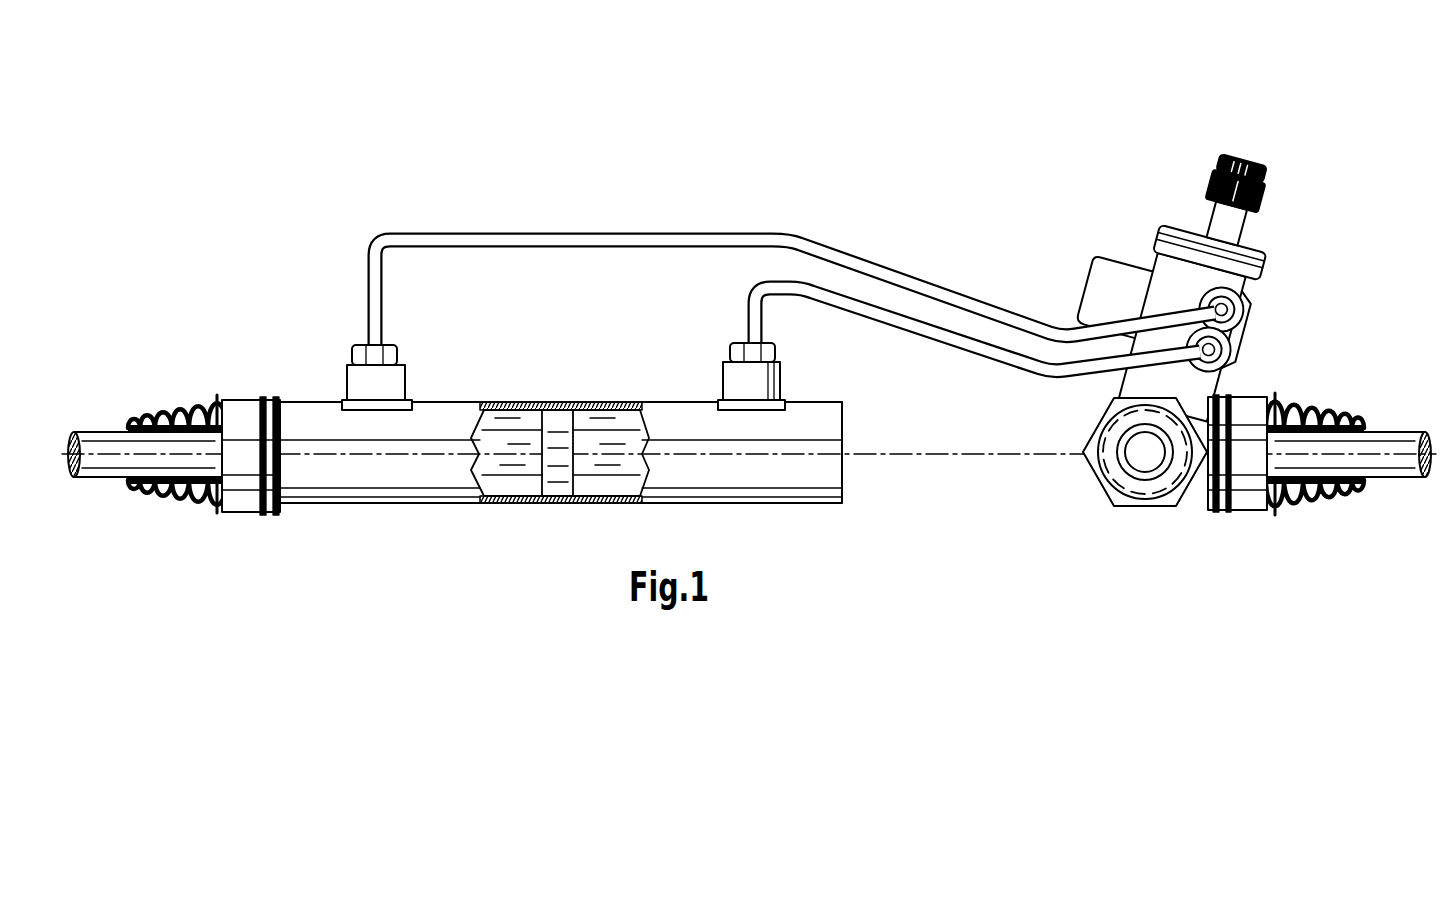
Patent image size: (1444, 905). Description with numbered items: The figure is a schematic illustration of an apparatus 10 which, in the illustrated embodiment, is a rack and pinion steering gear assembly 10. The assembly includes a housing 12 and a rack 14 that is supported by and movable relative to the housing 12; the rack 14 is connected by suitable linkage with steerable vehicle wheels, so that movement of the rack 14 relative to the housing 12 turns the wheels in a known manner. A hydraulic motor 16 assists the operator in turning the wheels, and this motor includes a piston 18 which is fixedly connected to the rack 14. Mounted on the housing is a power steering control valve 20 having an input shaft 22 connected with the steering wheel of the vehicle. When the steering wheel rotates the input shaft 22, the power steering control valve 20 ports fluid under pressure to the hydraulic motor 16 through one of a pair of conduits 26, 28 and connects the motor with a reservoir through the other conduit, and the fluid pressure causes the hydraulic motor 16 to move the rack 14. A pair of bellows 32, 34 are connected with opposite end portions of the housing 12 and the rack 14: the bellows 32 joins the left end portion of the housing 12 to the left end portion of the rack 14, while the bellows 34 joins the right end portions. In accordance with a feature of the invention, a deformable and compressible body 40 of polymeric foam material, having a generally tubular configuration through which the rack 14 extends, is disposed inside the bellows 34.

The rack and pinion steering gear assembly 10 is at (318, 117).
The housing 12 is at (390, 512).
The rack 14 is at (99, 440).
The hydraulic motor 16 is at (506, 388).
The piston 18 is at (559, 425).
The power steering control valve 20 is at (1188, 295).
The input shaft 22 is at (1232, 230).
The conduit 26 is at (858, 262).
The conduit 28 is at (905, 330).
The bellows 32 is at (175, 417).
The bellows 34 is at (1290, 390).
The deformable and compressible body 40 is at (1290, 500).